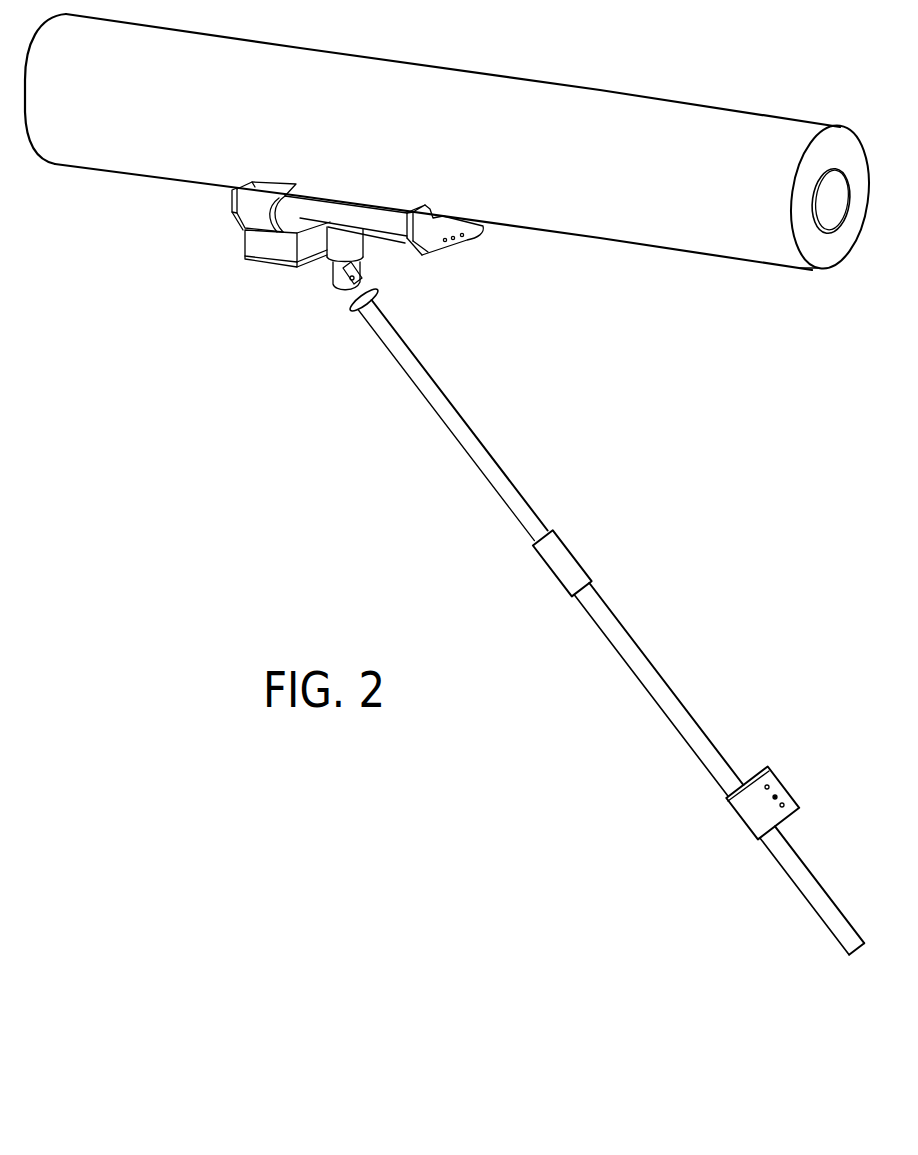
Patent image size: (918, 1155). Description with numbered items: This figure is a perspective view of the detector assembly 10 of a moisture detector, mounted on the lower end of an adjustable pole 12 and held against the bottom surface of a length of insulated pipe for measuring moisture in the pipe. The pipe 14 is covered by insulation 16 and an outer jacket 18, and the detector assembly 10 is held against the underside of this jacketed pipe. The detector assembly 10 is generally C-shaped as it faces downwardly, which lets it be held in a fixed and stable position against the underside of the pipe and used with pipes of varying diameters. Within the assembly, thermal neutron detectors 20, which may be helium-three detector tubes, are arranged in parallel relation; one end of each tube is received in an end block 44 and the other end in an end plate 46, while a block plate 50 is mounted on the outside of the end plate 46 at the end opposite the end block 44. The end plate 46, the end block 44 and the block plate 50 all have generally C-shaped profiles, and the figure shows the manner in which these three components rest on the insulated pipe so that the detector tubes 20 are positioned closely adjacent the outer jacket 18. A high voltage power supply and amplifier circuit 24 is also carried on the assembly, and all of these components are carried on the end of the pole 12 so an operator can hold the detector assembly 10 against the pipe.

The detector assembly 10 is at (394, 247).
The adjustable pole 12 is at (633, 644).
The pipe 14 is at (835, 167).
The insulation 16 is at (832, 262).
The outer jacket 18 is at (810, 271).
The thermal neutron detectors 20 is at (355, 212).
The high voltage power supply and amplifier circuit 24 is at (268, 261).
The end block 44 is at (463, 238).
The end plate 46 is at (262, 202).
The block plate 50 is at (232, 195).